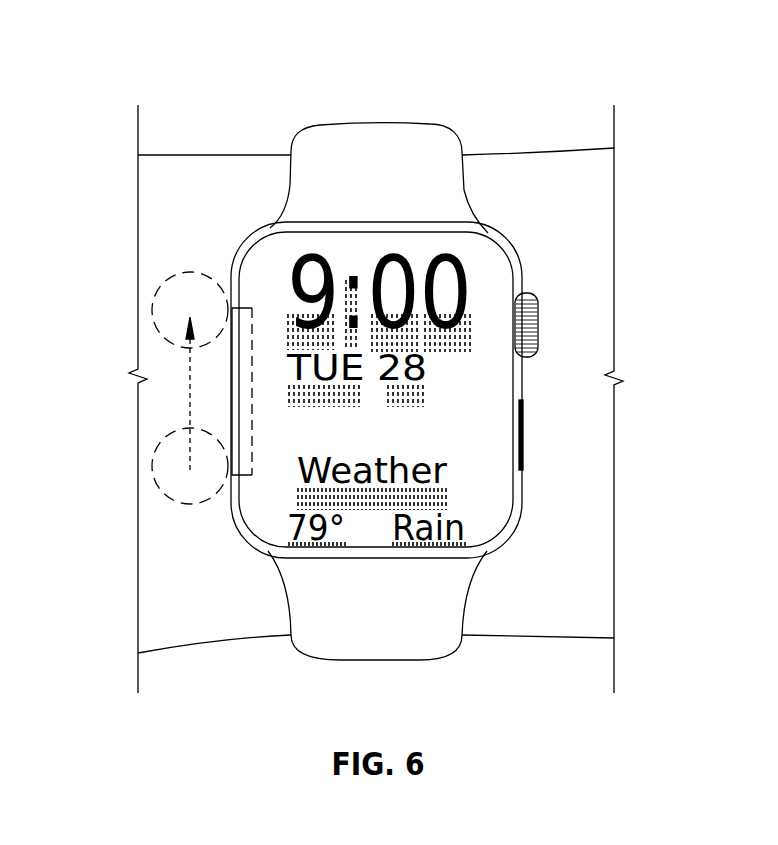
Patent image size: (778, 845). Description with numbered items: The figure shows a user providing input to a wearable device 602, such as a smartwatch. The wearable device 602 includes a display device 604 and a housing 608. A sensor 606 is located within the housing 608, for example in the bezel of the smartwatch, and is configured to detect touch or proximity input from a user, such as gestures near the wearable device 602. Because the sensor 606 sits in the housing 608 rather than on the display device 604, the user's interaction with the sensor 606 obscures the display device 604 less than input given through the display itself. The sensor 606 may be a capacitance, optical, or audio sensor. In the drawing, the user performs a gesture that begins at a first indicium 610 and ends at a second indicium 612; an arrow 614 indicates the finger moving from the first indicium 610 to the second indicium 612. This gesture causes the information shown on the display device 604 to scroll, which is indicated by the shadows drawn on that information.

The wearable device 602 is at (352, 104).
The display device 604 is at (484, 231).
The sensor 606 is at (255, 316).
The housing 608 is at (524, 388).
The first indicium 610 is at (162, 445).
The second indicium 612 is at (162, 290).
The arrow 614 is at (188, 400).